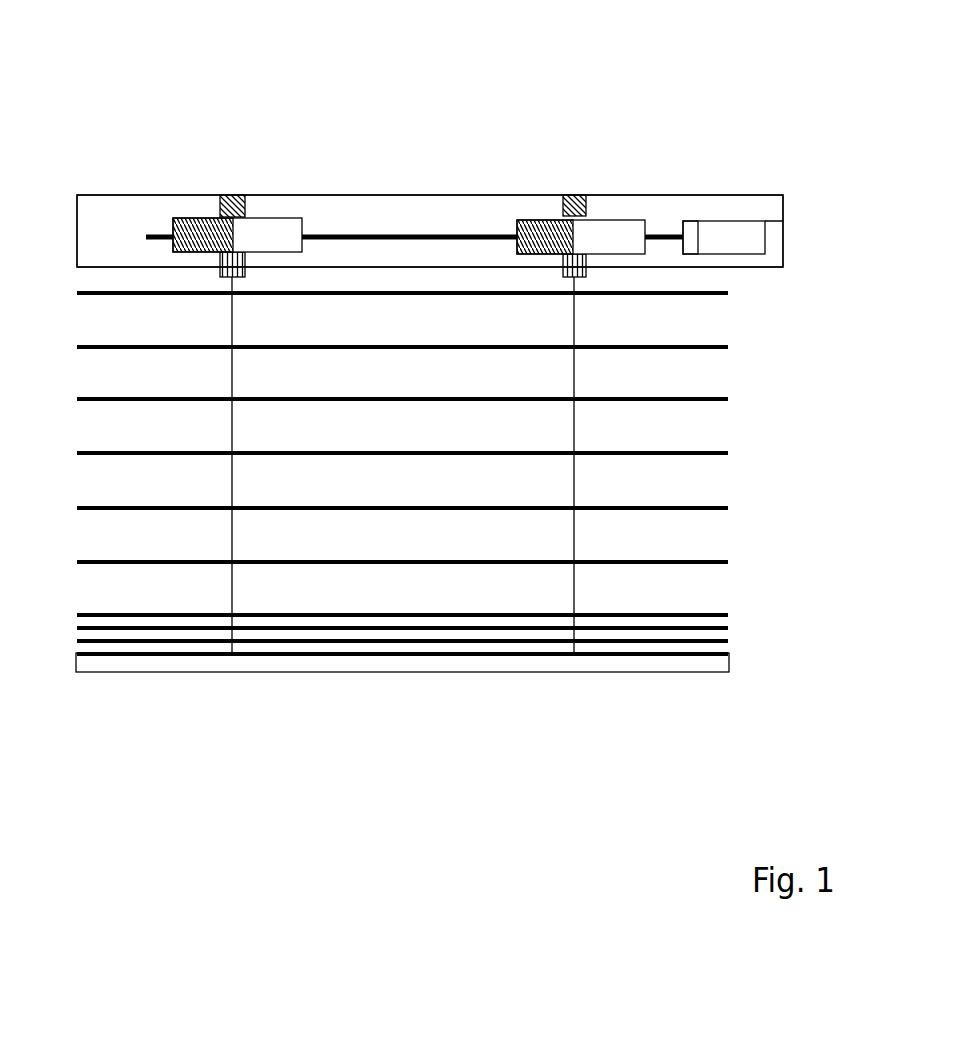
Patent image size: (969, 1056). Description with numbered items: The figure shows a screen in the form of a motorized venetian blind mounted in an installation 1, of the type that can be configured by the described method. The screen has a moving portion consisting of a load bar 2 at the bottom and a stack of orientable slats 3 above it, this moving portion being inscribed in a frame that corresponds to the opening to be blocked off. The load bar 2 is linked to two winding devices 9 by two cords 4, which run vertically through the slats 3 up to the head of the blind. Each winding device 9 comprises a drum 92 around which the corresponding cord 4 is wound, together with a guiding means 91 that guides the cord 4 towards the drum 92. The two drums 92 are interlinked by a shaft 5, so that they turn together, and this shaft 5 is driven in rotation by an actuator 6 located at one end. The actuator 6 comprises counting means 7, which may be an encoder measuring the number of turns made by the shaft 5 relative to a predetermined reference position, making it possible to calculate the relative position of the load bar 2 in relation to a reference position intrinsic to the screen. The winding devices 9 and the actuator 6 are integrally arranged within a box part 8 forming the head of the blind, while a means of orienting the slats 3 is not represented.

The installation 1 is at (802, 597).
The load bar 2 is at (132, 660).
The orientable slats 3 is at (728, 507).
The cords 4 is at (574, 525).
The shaft 5 is at (363, 237).
The actuator 6 is at (732, 240).
The counting means 7 is at (690, 238).
The box part 8 is at (777, 238).
The winding device 9 is at (410, 145).
The guiding means 91 is at (228, 199).
The drum 92 is at (237, 179).